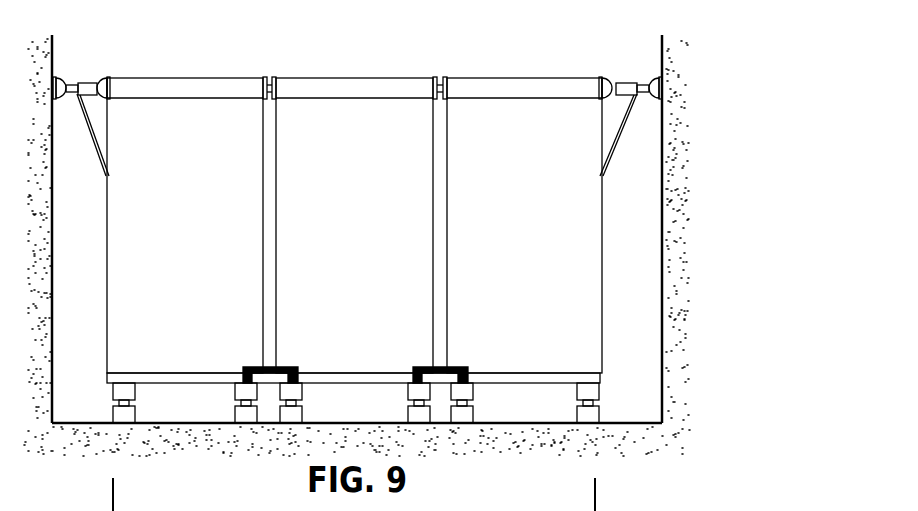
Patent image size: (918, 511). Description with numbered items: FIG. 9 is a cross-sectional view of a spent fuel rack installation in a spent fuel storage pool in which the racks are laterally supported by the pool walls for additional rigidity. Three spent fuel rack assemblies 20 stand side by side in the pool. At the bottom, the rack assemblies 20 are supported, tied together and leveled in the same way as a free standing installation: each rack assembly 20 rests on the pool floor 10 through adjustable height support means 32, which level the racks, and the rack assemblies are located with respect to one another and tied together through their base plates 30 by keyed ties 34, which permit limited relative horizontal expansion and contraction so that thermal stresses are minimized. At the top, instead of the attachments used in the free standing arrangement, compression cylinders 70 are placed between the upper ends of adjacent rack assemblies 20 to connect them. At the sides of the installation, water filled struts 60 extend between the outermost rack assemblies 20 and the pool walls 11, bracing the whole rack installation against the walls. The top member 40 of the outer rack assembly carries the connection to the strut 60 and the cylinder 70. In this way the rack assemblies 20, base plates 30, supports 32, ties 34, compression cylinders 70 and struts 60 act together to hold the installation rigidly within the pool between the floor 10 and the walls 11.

The pool floor 10 is at (325, 423).
The wall 11 is at (662, 302).
The spent fuel rack assembly 20 is at (201, 240).
The base plate 30 is at (150, 374).
The adjustable height support means 32 is at (475, 413).
The keyed tie 34 is at (283, 367).
The top frame member 40 is at (185, 116).
The water filled strut 60 is at (70, 82).
The compression cylinder 70 is at (268, 78).